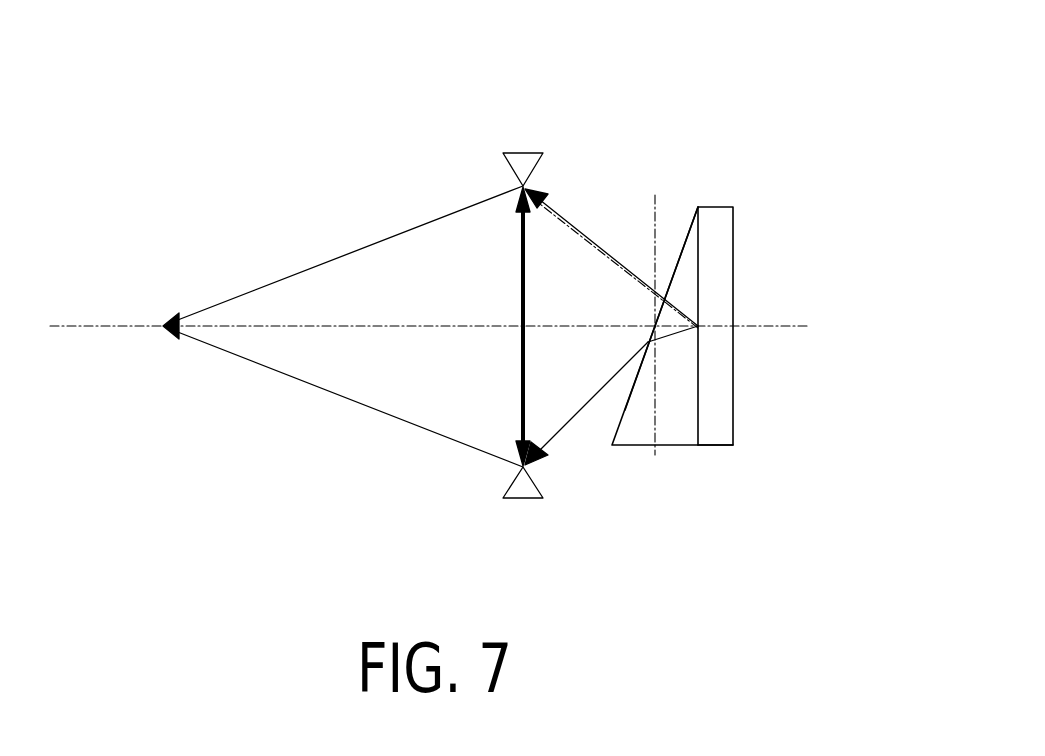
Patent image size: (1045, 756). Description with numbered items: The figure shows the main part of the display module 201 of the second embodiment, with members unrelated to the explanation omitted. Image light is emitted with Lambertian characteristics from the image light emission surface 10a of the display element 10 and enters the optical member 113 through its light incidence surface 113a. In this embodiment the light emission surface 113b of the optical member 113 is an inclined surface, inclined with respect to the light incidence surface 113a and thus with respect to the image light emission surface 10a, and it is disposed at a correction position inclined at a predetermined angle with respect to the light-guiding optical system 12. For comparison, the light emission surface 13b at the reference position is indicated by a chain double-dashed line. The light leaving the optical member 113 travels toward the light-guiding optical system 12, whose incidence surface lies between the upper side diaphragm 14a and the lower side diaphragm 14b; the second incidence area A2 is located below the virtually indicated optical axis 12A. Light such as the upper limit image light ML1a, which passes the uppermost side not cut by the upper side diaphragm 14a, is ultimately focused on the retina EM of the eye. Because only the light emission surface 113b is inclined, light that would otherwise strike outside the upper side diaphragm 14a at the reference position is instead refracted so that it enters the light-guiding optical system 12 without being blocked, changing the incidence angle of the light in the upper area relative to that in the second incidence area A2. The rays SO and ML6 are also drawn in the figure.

The display module 201 is at (792, 108).
The display element 10 is at (715, 226).
The image light emission surface 10a is at (685, 228).
The optical member 113 is at (625, 447).
The light incidence surface 113a is at (707, 410).
The light emission surface 113b is at (673, 268).
The light emission surface 13b is at (655, 420).
The upper side diaphragm 14a is at (518, 162).
The lower side diaphragm 14b is at (517, 493).
The light-guiding optical system 12 is at (520, 383).
The optical axis 12A is at (70, 328).
The retina EM is at (164, 329).
The light ray SO is at (326, 247).
The upper limit image light ML1a is at (606, 250).
The marginal ray ML6 is at (663, 320).
The second incidence area A2 is at (540, 402).